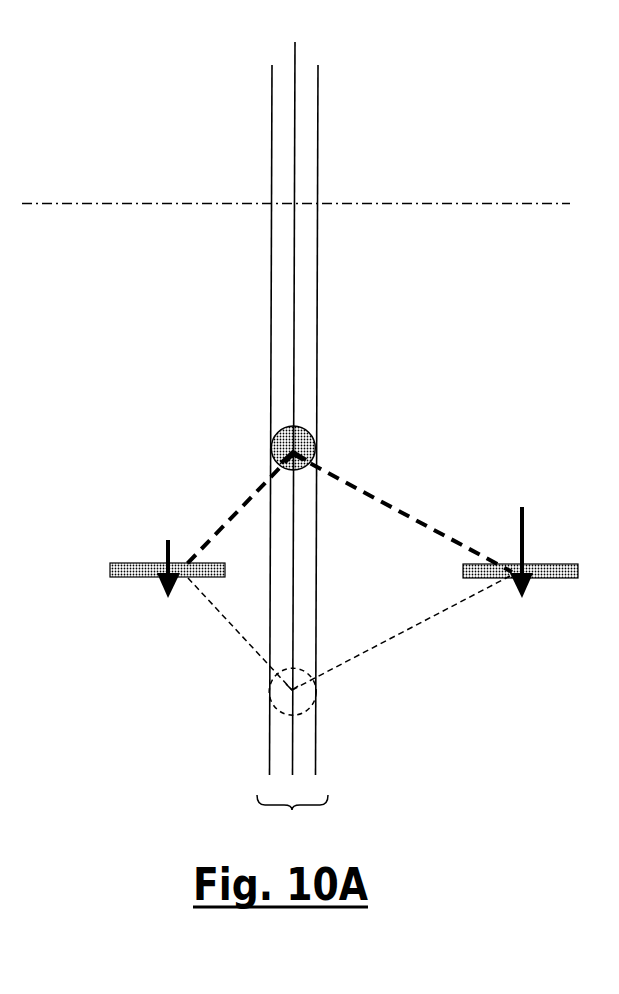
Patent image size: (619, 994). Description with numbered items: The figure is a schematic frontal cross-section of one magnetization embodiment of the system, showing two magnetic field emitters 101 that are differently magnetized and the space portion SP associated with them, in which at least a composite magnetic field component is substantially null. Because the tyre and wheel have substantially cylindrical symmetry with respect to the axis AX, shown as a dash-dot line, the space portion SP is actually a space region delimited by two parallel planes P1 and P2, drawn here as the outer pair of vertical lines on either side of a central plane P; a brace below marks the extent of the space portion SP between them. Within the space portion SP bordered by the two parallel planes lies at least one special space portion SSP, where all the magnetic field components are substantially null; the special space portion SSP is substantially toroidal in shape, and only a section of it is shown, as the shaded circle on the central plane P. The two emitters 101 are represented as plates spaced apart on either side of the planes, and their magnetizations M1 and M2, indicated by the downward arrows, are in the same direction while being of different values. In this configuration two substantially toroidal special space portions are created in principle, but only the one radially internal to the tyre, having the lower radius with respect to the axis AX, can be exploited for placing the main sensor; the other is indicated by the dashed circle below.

The plane P is at (295, 45).
The first parallel plane P1 is at (318, 133).
The second parallel plane P2 is at (272, 147).
The axis AX is at (296, 224).
The special space portion SSP is at (316, 442).
The magnetic field emitter 101 is at (110, 566).
The first magnetization M1 is at (157, 557).
The second magnetization M2 is at (504, 545).
The space portion SP is at (292, 821).